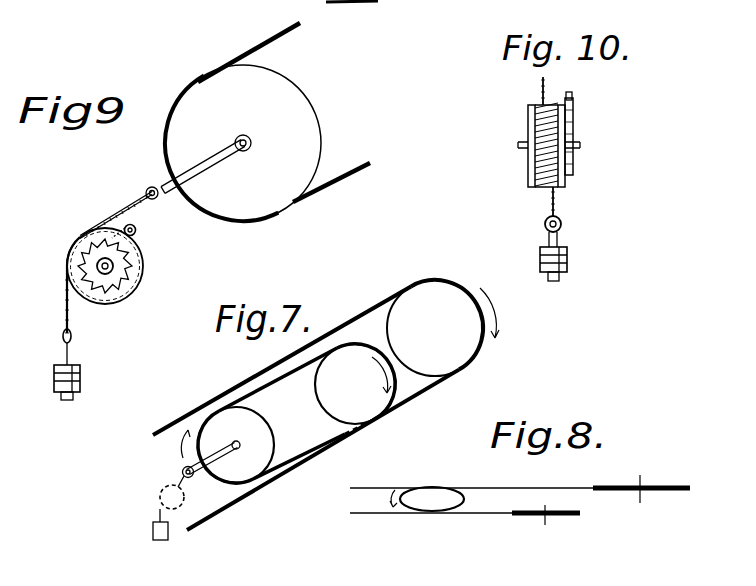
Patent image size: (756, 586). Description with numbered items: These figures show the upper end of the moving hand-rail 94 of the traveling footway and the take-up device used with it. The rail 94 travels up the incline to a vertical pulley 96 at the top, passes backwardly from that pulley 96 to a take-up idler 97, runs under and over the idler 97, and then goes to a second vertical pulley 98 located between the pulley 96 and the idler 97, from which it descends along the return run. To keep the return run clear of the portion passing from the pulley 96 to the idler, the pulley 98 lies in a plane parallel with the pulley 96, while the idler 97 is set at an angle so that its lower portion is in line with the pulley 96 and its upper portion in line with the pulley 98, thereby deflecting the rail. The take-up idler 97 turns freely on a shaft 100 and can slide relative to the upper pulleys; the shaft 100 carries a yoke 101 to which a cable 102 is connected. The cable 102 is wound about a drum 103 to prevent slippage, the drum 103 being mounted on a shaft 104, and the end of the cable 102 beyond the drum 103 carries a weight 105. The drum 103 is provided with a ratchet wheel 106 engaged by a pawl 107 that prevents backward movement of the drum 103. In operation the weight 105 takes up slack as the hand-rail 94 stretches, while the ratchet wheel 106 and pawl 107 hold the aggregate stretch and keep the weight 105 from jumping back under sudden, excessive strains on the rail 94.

In FIG. 9, the conveyor belt 94 is at (260, 43).
In FIG. 7, the conveyor belt 94 is at (243, 387).
In FIG. 7, the pulley 96 is at (445, 295).
In FIG. 8, the pulley 96 is at (670, 485).
In FIG. 9, the take-up idler 97 is at (295, 103).
In FIG. 7, the take-up idler 97 is at (213, 433).
In FIG. 8, the take-up idler 97 is at (425, 508).
In FIG. 7, the pulley 98 is at (363, 353).
In FIG. 8, the pulley 98 is at (569, 518).
In FIG. 9, the shaft 100 is at (247, 137).
In FIG. 9, the yoke 101 is at (202, 170).
In FIG. 9, the cable 102 is at (107, 225).
In FIG. 9, the drum 103 is at (73, 255).
In FIG. 10, the drum 103 is at (537, 172).
In FIG. 9, the shaft 104 is at (112, 262).
In FIG. 10, the shaft 104 is at (518, 145).
In FIG. 9, the weight 105 is at (54, 376).
In FIG. 10, the weight 105 is at (567, 253).
In FIG. 9, the ratchet wheel 106 is at (120, 269).
In FIG. 10, the ratchet wheel 106 is at (573, 138).
In FIG. 9, the pawl 107 is at (135, 227).
In FIG. 10, the pawl 107 is at (572, 107).